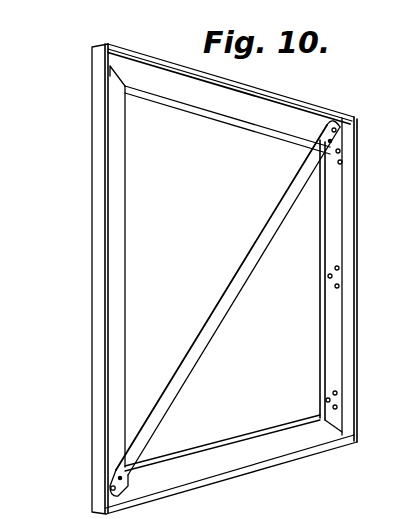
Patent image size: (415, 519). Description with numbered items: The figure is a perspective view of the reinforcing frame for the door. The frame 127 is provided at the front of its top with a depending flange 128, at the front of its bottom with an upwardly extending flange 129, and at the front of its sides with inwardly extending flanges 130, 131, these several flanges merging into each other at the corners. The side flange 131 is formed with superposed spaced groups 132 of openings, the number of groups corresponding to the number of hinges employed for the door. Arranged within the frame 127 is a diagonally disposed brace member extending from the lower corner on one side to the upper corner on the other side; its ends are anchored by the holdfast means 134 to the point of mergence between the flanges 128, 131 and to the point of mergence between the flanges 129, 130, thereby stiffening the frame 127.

The frame 127 is at (92, 152).
The depending flange 128 is at (213, 101).
The upwardly extending flange 129 is at (242, 452).
The inwardly extending flange 130 is at (118, 206).
The inwardly extending flange 131 is at (331, 297).
The groups of openings 132 is at (335, 266).
The holdfast means 134 is at (340, 131).